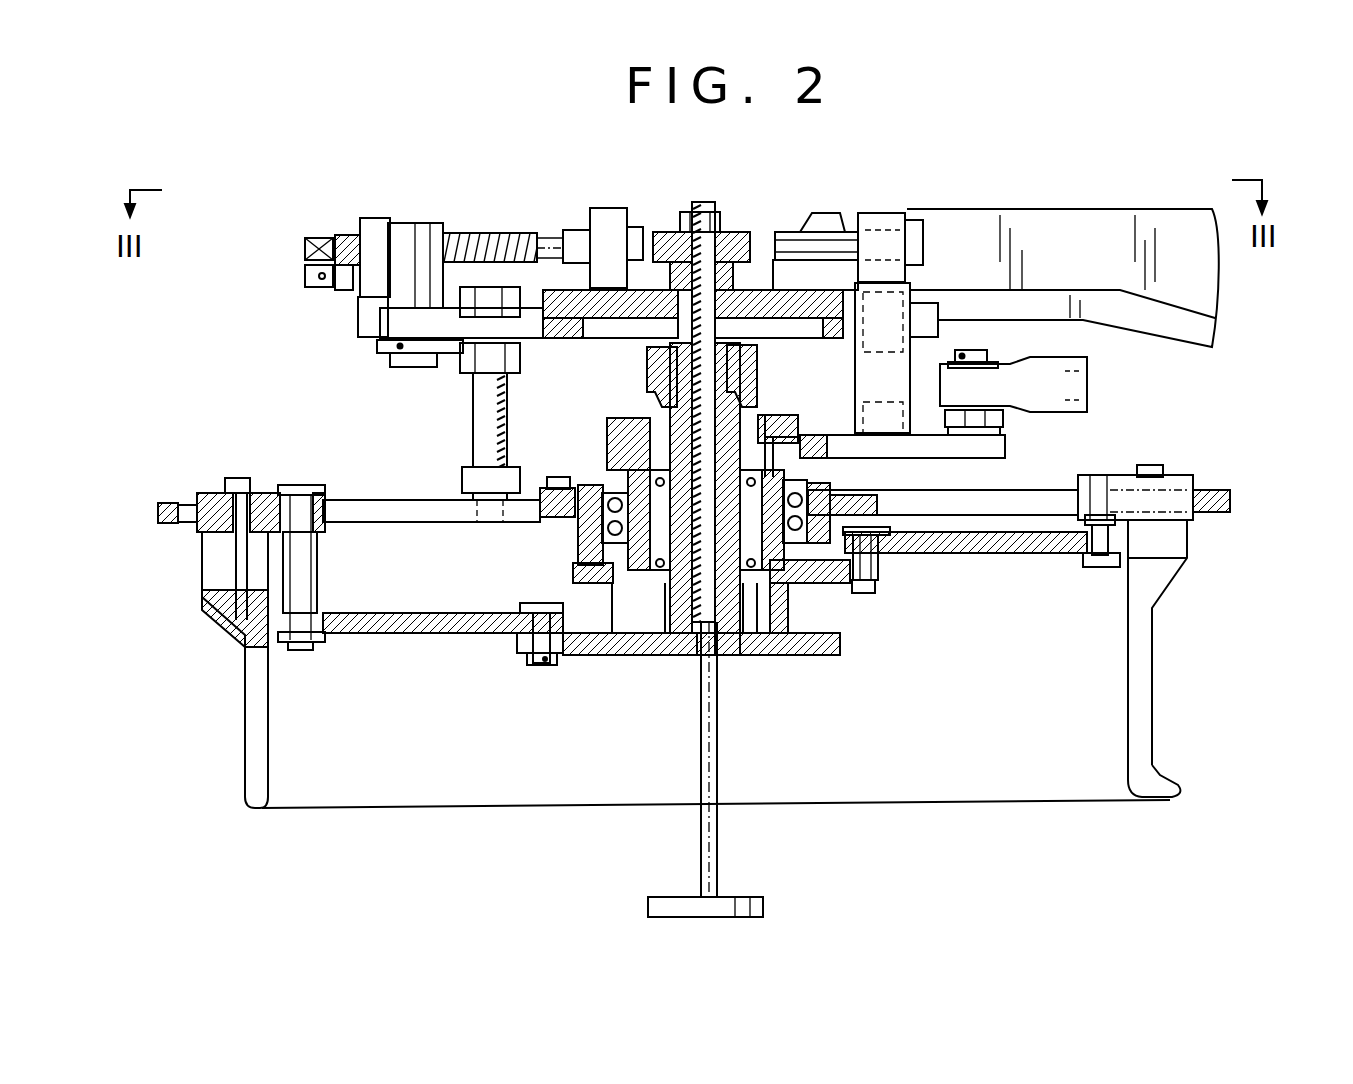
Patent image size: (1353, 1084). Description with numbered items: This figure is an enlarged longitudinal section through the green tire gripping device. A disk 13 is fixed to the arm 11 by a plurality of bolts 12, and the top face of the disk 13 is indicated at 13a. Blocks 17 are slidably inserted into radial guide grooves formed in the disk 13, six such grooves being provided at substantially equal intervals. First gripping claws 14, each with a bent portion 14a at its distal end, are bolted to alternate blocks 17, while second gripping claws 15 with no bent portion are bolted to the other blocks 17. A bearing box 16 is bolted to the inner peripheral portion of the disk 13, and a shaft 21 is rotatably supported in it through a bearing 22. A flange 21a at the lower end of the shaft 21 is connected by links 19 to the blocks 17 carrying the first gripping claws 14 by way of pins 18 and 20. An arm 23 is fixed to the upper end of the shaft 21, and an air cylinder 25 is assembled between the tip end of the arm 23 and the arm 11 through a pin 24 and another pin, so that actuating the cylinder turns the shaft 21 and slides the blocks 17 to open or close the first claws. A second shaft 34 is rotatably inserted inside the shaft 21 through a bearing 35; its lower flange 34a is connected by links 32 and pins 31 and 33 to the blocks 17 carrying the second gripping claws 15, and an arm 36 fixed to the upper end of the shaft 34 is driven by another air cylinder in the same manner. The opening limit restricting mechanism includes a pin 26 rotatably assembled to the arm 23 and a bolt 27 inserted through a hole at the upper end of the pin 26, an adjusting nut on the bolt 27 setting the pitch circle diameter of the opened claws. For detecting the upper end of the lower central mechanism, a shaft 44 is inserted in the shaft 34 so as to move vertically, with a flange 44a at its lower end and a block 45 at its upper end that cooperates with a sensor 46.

The arm 11 is at (1205, 300).
The bolts 12 is at (470, 423).
The disk 13 is at (1232, 502).
The beam upper surface 13a is at (1043, 490).
The first gripping claws 14 is at (1152, 692).
The bent portion 14a is at (1172, 778).
The second gripping claws 15 is at (247, 795).
The bearing box 16 is at (843, 505).
The blocks 17 is at (1178, 477).
The pin 18 is at (1098, 567).
The links 19 is at (1000, 553).
The pin 20 is at (880, 590).
The shaft 21 is at (755, 600).
The flange 21a is at (830, 587).
The bearing 22 is at (800, 495).
The arm 23 is at (810, 436).
The pin 24 is at (978, 349).
The air cylinder 25 is at (1073, 390).
The pin 26 is at (896, 213).
The bolt 27 is at (830, 230).
The pin 31 is at (293, 657).
The links 32 is at (390, 632).
The pin 33 is at (538, 677).
The shaft 34 is at (673, 657).
The flange 34a is at (598, 657).
The bearing 35 is at (663, 590).
The arm 36 is at (838, 370).
The shaft 44 is at (720, 843).
The flange 44a is at (763, 903).
The block 45 is at (740, 232).
The sensor 46 is at (628, 232).